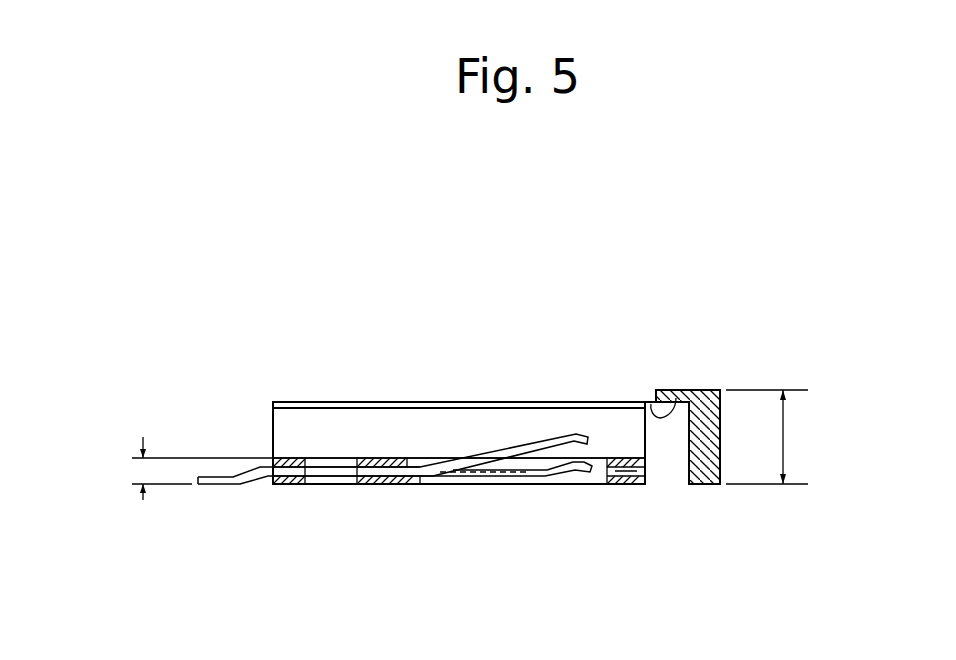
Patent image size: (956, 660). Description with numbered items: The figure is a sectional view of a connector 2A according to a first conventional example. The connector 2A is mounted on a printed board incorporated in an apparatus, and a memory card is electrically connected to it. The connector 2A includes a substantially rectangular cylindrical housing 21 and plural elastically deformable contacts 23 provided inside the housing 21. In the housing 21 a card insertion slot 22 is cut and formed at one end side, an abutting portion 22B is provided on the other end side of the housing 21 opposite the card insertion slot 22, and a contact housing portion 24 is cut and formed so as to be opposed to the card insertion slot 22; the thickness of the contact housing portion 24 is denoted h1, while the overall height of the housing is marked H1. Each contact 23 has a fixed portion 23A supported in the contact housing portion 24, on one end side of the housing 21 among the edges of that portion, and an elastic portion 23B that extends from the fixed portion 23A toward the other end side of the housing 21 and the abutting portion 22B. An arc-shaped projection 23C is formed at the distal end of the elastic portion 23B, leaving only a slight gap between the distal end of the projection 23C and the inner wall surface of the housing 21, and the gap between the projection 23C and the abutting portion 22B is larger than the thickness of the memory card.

The connector 2A is at (540, 354).
The housing 21 is at (330, 420).
The card insertion slot 22 is at (396, 398).
The abutting portion 22B is at (676, 398).
The contact 23 is at (500, 468).
The fixed portion 23A is at (378, 481).
The elastic portion 23B is at (506, 479).
The projection 23C is at (578, 435).
The contact housing portion 24 is at (435, 485).
The thickness of the contact housing portion h1 is at (183, 468).
The height of the connector H1 is at (789, 437).